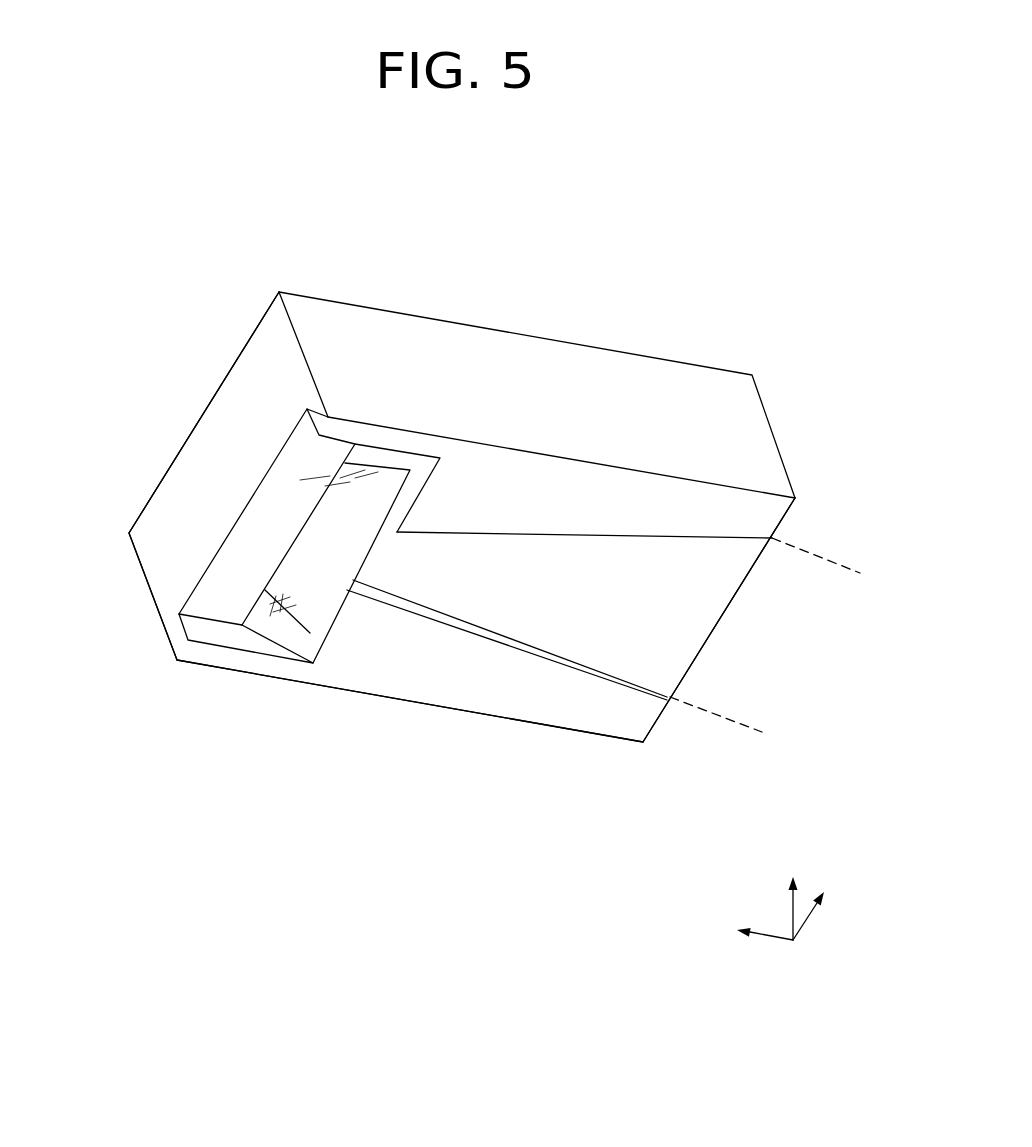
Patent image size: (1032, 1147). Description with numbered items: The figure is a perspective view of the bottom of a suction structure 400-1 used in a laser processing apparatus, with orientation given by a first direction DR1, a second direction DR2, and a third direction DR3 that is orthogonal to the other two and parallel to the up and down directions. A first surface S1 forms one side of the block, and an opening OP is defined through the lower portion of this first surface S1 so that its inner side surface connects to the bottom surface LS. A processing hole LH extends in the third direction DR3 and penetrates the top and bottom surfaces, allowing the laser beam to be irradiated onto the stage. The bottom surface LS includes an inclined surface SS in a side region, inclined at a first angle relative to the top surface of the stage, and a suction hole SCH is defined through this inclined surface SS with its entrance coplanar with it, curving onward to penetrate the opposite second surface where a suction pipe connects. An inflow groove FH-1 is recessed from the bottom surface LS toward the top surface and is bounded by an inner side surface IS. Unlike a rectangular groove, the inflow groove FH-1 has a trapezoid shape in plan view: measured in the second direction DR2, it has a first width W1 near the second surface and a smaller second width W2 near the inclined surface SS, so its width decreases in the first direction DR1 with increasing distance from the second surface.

The suction structure 400-1 is at (666, 292).
The first surface S1 is at (244, 402).
The processing hole LH is at (293, 527).
The opening OP is at (210, 589).
The inclined surface SS is at (267, 628).
The suction hole SCH is at (323, 602).
The bottom surface LS is at (491, 681).
The inner side surface IS is at (605, 637).
The inflow groove FH-1 is at (694, 612).
The first width W1 is at (844, 579).
The second width W2 is at (388, 541).
The first direction DR1 is at (745, 929).
The second direction DR2 is at (830, 910).
The third direction DR3 is at (793, 894).